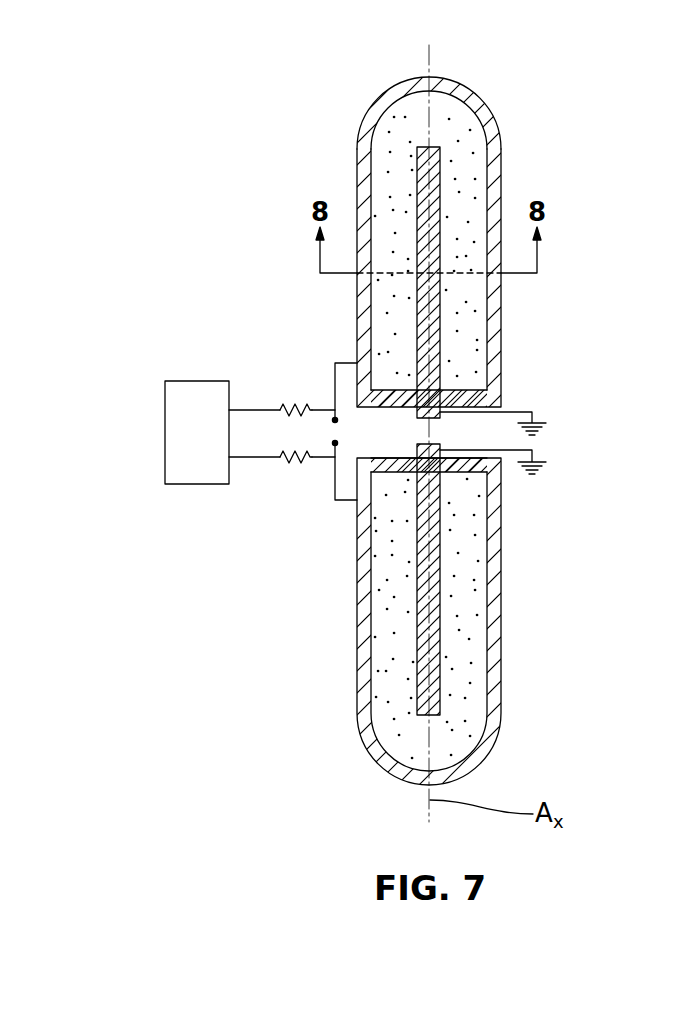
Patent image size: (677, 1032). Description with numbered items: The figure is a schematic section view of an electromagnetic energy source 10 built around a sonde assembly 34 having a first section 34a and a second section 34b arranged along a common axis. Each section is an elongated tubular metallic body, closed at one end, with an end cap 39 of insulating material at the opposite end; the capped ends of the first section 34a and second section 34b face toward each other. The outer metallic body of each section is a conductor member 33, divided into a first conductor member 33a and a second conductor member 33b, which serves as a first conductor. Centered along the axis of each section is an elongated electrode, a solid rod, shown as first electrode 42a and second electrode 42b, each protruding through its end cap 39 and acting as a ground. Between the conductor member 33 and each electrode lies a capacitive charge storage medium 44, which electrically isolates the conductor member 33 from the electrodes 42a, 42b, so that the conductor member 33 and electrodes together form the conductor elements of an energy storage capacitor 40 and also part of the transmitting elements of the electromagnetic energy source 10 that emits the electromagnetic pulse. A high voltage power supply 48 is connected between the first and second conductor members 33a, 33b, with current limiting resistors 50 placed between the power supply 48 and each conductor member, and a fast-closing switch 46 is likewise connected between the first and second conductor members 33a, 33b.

The electromagnetic energy source 10 is at (257, 208).
The conductor member 33 is at (492, 328).
The first conductor member 33a is at (493, 653).
The second conductor member 33b is at (360, 133).
The sonde assembly 34 is at (235, 555).
The first section 34a is at (523, 538).
The second section 34b is at (520, 123).
The end cap 39 is at (495, 397).
The energy storage capacitor 40 is at (327, 610).
The first electrode 42a is at (440, 612).
The second electrode 42b is at (440, 173).
The capacitive charge storage medium 44 is at (393, 535).
The fast-closing switch 46 is at (337, 428).
The high voltage power supply 48 is at (165, 405).
The current limiting resistors 50 is at (288, 462).